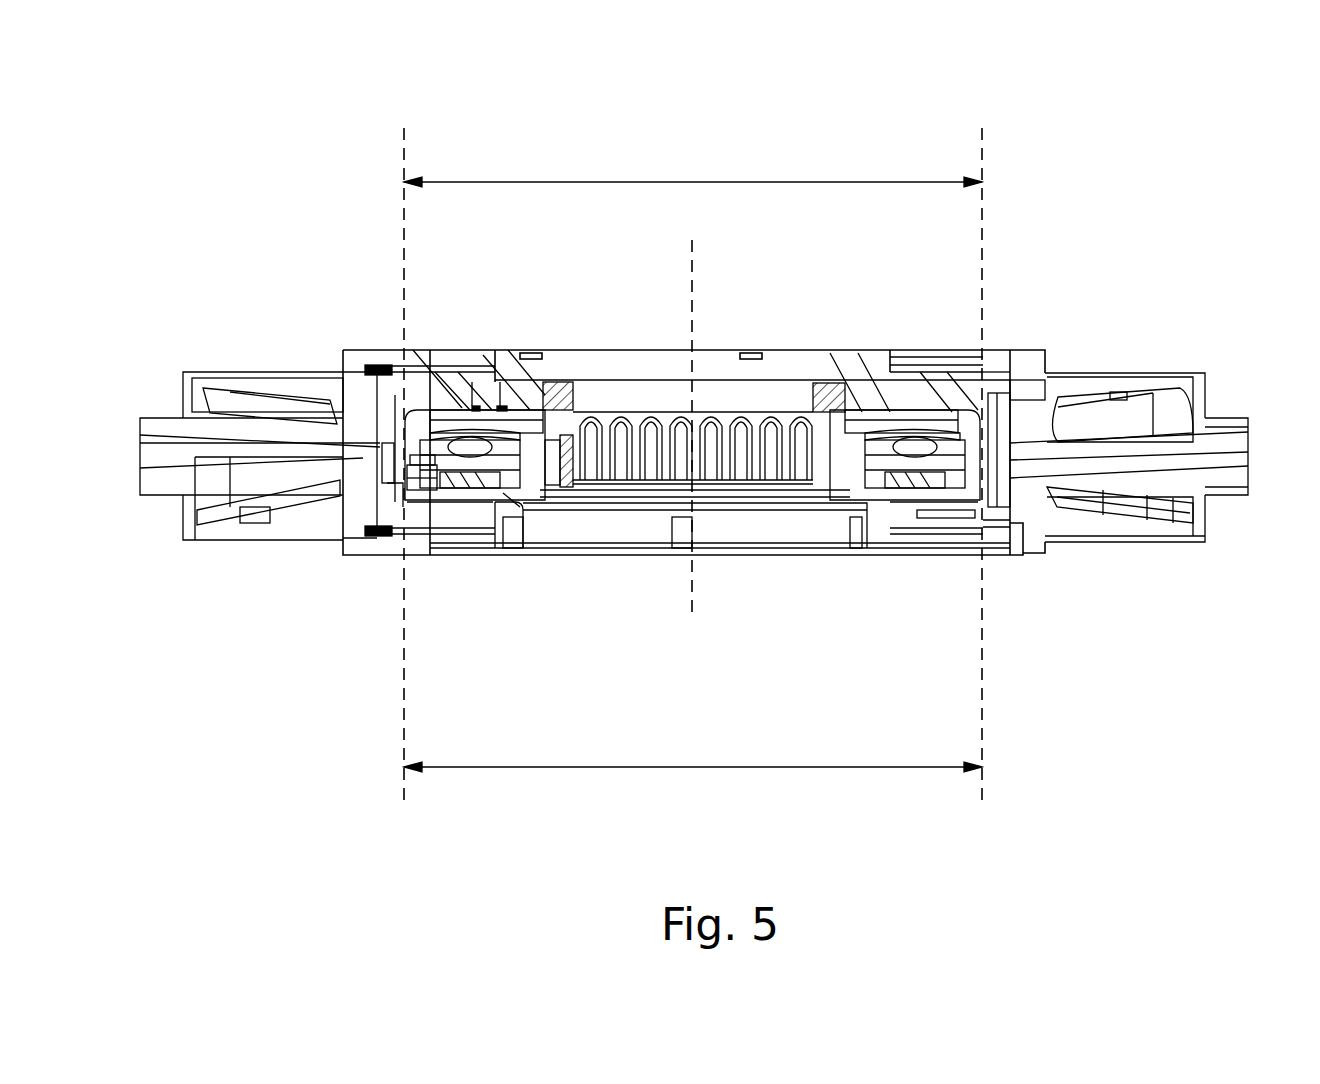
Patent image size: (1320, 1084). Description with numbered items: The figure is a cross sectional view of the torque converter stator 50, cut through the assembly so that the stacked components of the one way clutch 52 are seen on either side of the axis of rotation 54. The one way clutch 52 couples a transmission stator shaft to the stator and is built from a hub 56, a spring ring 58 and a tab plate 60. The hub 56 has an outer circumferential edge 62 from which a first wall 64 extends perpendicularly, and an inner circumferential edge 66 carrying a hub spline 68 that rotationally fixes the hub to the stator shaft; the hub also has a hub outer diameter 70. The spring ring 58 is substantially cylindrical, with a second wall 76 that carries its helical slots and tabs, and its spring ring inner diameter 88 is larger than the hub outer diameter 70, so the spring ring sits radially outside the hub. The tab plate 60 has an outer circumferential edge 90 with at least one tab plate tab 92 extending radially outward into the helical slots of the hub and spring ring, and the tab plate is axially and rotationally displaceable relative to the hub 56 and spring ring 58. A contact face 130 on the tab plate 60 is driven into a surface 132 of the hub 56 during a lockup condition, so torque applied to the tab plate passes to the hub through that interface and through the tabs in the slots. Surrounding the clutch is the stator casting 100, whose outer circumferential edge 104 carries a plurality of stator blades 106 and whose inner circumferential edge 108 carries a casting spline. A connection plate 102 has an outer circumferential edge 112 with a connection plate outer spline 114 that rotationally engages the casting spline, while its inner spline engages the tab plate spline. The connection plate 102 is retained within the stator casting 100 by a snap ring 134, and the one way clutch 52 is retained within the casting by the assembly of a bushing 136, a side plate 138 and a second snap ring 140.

The torque converter stator 50 is at (196, 112).
The one way clutch 52 is at (430, 562).
The axis of rotation 54 is at (705, 573).
The hub 56 is at (520, 352).
The spring ring 58 is at (417, 352).
The tab plate 60 is at (547, 470).
The outer circumferential edge 62 is at (961, 418).
The first wall 64 is at (383, 452).
The inner circumferential edge 66 is at (813, 413).
The hub spline 68 is at (650, 437).
The hub outer diameter 70 is at (668, 767).
The second wall 76 is at (387, 440).
The spring ring inner diameter 88 is at (668, 182).
The outer circumferential edge 90 is at (393, 513).
The tab plate tab 92 is at (975, 518).
The stator casting 100 is at (1052, 338).
The connection plate 102 is at (387, 463).
The outer circumferential edge 104 is at (1210, 393).
The stator blades 106 is at (1107, 422).
The inner circumferential edge 108 is at (345, 435).
The outer circumferential edge 112 is at (1003, 508).
The connection plate outer spline 114 is at (997, 458).
The contact face 130 is at (907, 440).
The surface 132 is at (470, 352).
The snap ring 134 is at (393, 467).
The bushing 136 is at (590, 352).
The side plate 138 is at (505, 352).
The snap ring 140 is at (388, 352).